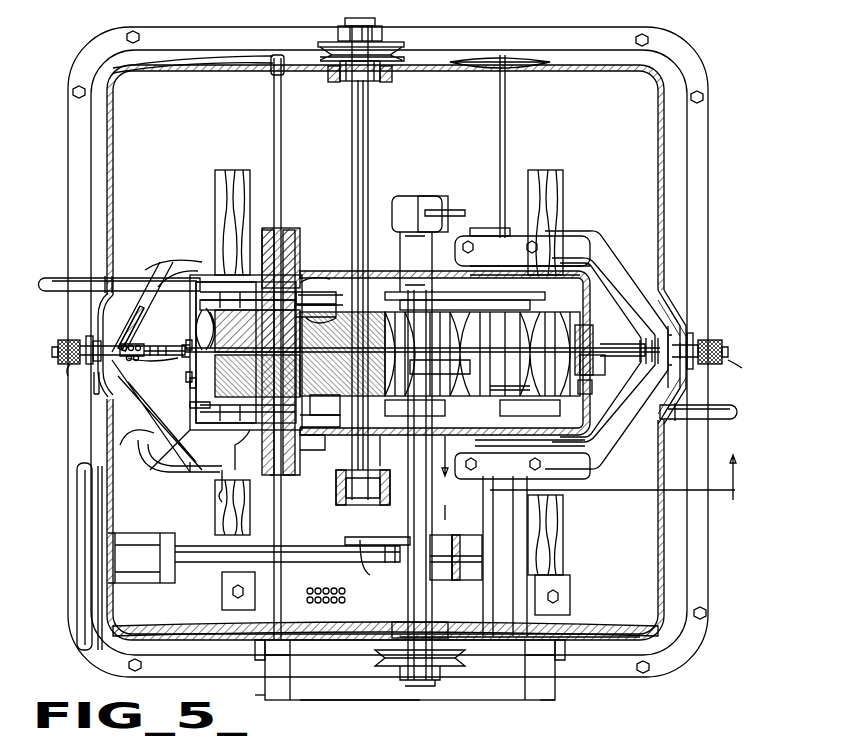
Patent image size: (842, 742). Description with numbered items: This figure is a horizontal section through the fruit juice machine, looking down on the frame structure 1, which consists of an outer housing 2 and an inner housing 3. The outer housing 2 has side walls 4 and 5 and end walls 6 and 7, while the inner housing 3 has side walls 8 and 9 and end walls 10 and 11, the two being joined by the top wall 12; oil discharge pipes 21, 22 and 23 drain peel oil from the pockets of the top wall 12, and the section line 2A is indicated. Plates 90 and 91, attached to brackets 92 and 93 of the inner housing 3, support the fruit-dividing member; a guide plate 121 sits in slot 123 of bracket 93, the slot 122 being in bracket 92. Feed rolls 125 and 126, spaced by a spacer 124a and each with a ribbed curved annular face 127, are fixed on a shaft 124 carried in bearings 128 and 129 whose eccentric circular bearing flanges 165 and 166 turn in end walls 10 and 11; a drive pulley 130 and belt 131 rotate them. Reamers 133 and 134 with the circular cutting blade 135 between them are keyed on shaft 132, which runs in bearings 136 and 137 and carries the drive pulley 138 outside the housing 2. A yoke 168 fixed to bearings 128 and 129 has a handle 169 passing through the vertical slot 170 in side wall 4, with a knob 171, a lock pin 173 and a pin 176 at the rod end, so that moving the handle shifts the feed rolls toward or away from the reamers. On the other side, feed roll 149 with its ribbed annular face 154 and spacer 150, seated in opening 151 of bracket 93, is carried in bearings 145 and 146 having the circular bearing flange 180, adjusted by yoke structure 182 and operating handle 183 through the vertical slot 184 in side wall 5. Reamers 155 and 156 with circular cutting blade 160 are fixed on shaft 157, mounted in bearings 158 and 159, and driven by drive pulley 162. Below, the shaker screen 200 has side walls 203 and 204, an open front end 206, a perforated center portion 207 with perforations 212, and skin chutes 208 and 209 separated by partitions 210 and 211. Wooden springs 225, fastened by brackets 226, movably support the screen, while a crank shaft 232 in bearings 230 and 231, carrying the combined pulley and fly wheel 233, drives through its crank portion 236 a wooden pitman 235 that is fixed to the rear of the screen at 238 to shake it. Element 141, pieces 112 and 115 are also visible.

The frame structure 1 is at (707, 190).
The outer housing 2 is at (690, 253).
The shaft 2A is at (52, 278).
The inner housing 3 is at (425, 268).
The side wall 4 is at (108, 227).
The side wall 5 is at (664, 547).
The end wall 6 is at (600, 70).
The end wall 7 is at (610, 636).
The side wall 8 is at (160, 460).
The side wall 9 is at (597, 320).
The end wall 10 is at (215, 260).
The end wall 11 is at (590, 484).
The top wall 12 is at (385, 352).
The oil discharge pipe 21 is at (56, 356).
The oil discharge pipe 22 is at (728, 350).
The oil discharge pipe 23 is at (732, 408).
The plate 90 is at (412, 451).
The plate 91 is at (325, 277).
The bracket 92 is at (190, 404).
The bracket 93 is at (592, 388).
The link 112 is at (130, 365).
The link 115 is at (134, 345).
The guide plate 121 is at (186, 340).
The slot 122 is at (316, 314).
The slot 123 is at (415, 408).
The shaft 124 is at (285, 232).
The spacer 124a is at (197, 294).
The feed roll 125 is at (248, 330).
The feed roll 126 is at (257, 376).
The curved annular face 127 is at (190, 382).
The bearing 128 is at (276, 228).
The bearing 129 is at (320, 452).
The drive pulley 130 is at (240, 418).
The belt 131 is at (530, 408).
The shaft 132 is at (373, 165).
The reamer 133 is at (324, 423).
The reamer 134 is at (318, 414).
The circular cutting blade 135 is at (342, 344).
The bearing 136 is at (385, 85).
The bearing 137 is at (340, 492).
The drive pulley 138 is at (392, 22).
The lower bracket 141 is at (540, 484).
The bearing 145 is at (490, 228).
The bearing 146 is at (482, 354).
The feed roll 149 is at (510, 380).
The spacer 150 is at (615, 328).
The opening 151 is at (622, 344).
The annular face 154 is at (596, 365).
The reamer 155 is at (422, 340).
The reamer 156 is at (436, 373).
The shaft 157 is at (440, 535).
The bearing 158 is at (440, 196).
The bearing 159 is at (402, 622).
The circular cutting blade 160 is at (465, 294).
The drive pulley 162 is at (385, 680).
The circular bearing flange 165 is at (300, 280).
The circular bearing flange 166 is at (248, 462).
The yoke 168 is at (185, 265).
The handle 169 is at (70, 368).
The vertical slot 170 is at (84, 335).
The knob 171 is at (92, 342).
The lock pin 173 is at (95, 395).
The pin 176 is at (176, 340).
The circular bearing flange 180 is at (538, 252).
The yoke structure 182 is at (600, 250).
The operating handle 183 is at (746, 369).
The vertical slot 184 is at (694, 336).
The shaker screen 200 is at (385, 345).
The side wall 203 is at (255, 648).
The side wall 204 is at (560, 650).
The open front end 206 is at (375, 700).
The center portion 207 is at (423, 694).
The skin chute 208 is at (275, 688).
The skin chute 209 is at (520, 700).
The partition 210 is at (277, 670).
The partition 211 is at (521, 670).
The perforations 212 is at (336, 597).
The wooden spring 225 is at (248, 160).
The bracket 226 is at (222, 598).
The bearing 230 is at (163, 519).
The bearing 231 is at (456, 557).
The crank shaft 232 is at (200, 562).
The combined pulley and fly wheel 233 is at (78, 620).
The pitman 235 is at (380, 570).
The crank portion 236 is at (345, 541).
The pitman attachment point 238 is at (387, 219).